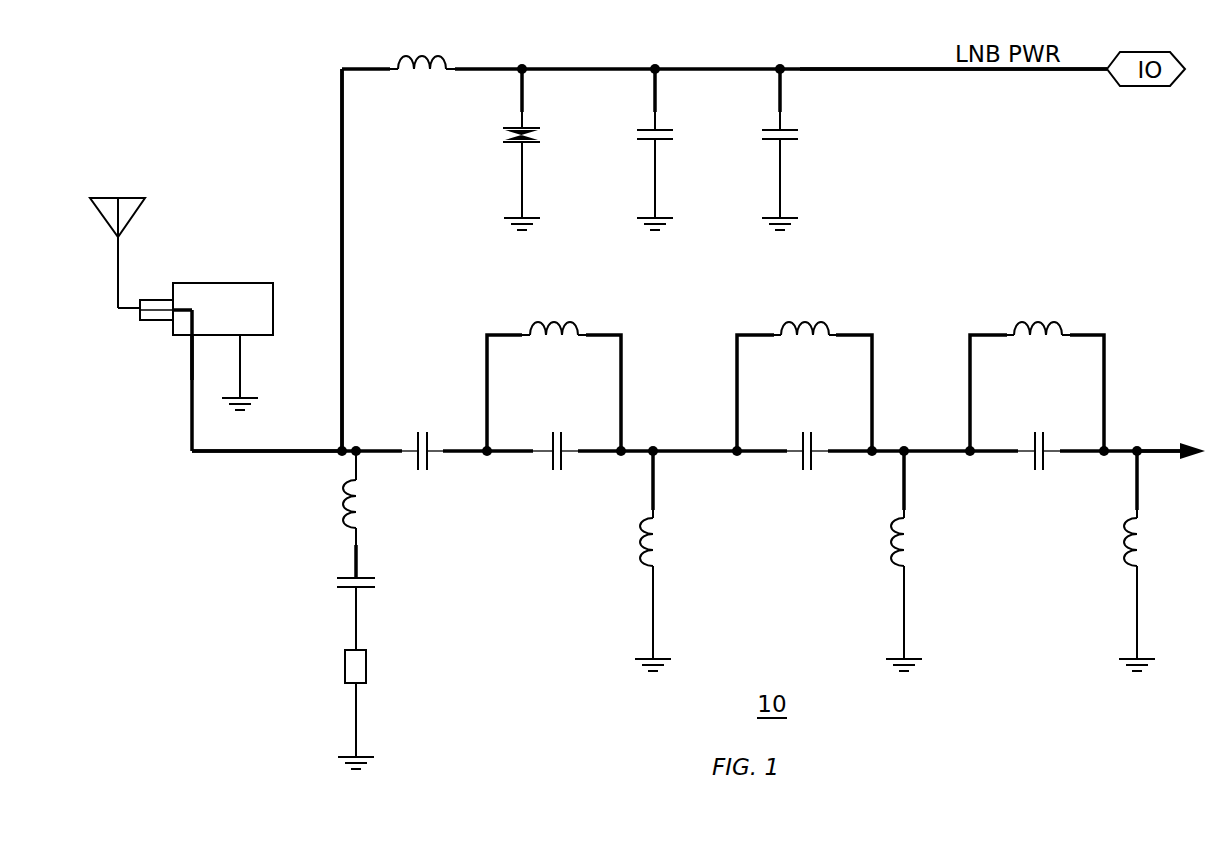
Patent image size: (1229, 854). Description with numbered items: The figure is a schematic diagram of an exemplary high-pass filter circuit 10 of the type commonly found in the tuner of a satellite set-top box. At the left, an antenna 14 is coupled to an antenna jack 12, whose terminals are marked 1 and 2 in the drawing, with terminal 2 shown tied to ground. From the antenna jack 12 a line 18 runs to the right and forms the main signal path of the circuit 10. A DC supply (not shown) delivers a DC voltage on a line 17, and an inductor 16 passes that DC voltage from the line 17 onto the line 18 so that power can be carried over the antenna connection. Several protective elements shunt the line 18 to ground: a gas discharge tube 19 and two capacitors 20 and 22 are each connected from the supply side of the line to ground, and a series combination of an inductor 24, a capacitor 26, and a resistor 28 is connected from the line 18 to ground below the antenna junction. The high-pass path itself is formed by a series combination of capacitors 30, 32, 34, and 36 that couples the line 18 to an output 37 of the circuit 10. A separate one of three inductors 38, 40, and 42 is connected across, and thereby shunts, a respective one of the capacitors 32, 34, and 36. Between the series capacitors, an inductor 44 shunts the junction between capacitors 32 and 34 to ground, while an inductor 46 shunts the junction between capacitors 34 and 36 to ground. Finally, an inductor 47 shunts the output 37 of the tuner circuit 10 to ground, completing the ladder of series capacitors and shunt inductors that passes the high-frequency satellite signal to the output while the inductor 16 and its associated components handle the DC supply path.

The high-pass filter circuit 10 is at (564, 393).
The antenna jack 12 is at (277, 306).
The connector center pin 1 is at (183, 357).
The connector ground pin 2 is at (241, 372).
The antenna 14 is at (117, 197).
The inductor 16 is at (426, 55).
The line 17 is at (895, 68).
The line 18 is at (230, 454).
The gas discharge tube 19 is at (506, 132).
The capacitor 20 is at (637, 134).
The capacitor 22 is at (758, 134).
The inductor 24 is at (364, 497).
The capacitor 26 is at (375, 585).
The resistor 28 is at (367, 670).
The capacitor 30 is at (425, 432).
The capacitor 32 is at (559, 432).
The capacitor 34 is at (808, 432).
The capacitor 36 is at (1041, 432).
The output 37 is at (1174, 450).
The inductor 38 is at (558, 322).
The inductor 40 is at (808, 322).
The inductor 42 is at (1041, 322).
The inductor 44 is at (641, 544).
The inductor 46 is at (892, 544).
The inductor 47 is at (1123, 544).